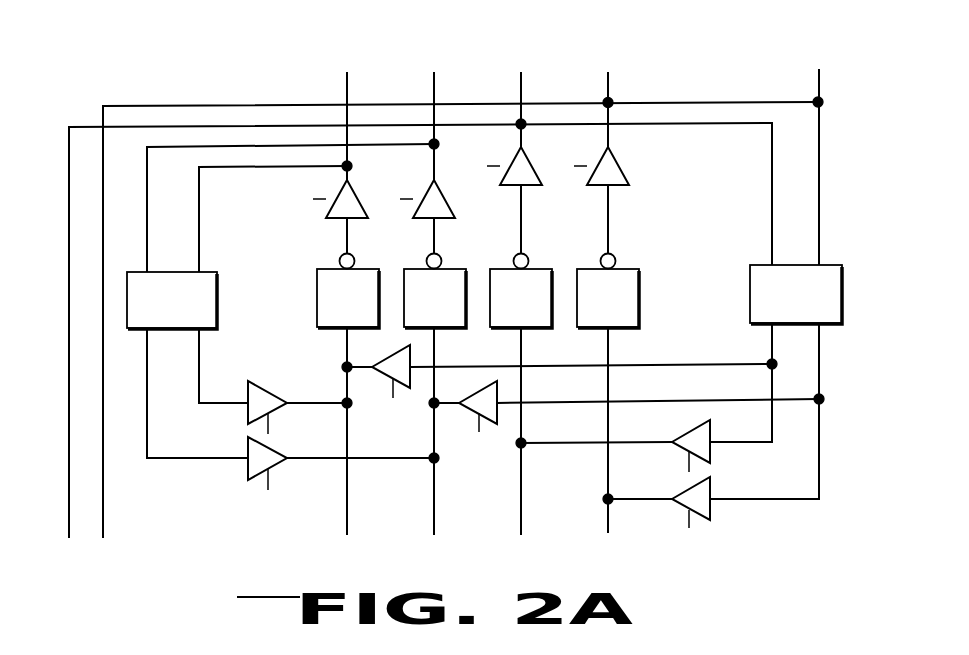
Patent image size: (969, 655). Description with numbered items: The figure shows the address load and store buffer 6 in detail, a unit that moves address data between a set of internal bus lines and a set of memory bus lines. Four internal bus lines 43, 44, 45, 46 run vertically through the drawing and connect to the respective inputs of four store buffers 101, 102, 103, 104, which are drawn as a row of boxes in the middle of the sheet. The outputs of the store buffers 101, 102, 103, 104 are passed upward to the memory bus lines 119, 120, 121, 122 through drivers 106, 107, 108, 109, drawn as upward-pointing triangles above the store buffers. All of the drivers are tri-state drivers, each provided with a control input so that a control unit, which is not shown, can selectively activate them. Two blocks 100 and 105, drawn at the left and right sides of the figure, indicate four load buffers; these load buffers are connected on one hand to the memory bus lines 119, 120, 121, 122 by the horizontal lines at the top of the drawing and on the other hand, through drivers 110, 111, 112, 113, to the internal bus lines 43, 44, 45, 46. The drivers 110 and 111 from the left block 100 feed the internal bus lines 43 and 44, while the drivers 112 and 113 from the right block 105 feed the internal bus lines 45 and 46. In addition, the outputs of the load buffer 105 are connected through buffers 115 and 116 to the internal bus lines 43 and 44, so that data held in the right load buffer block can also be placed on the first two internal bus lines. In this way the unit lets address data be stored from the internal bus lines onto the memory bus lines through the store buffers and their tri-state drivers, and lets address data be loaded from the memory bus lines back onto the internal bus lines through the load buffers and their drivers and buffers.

The address load and store buffer 6 is at (82, 77).
The bus line 43 is at (347, 522).
The bus line 44 is at (434, 522).
The bus line 45 is at (521, 522).
The bus line 46 is at (608, 520).
The load buffer block 100 is at (217, 279).
The store buffer 101 is at (363, 266).
The store buffer 102 is at (450, 266).
The store buffer 103 is at (537, 266).
The store buffer 104 is at (624, 266).
The load buffer block 105 is at (832, 265).
The driver 106 is at (352, 200).
The driver 107 is at (447, 196).
The driver 108 is at (535, 186).
The driver 109 is at (622, 186).
The driver 110 is at (263, 390).
The driver 111 is at (268, 434).
The driver 112 is at (712, 450).
The driver 113 is at (712, 508).
The buffer 115 is at (406, 386).
The buffer 116 is at (492, 422).
The memory bus line 119 is at (345, 87).
The memory bus line 120 is at (432, 87).
The memory bus line 121 is at (519, 87).
The memory bus line 122 is at (606, 87).